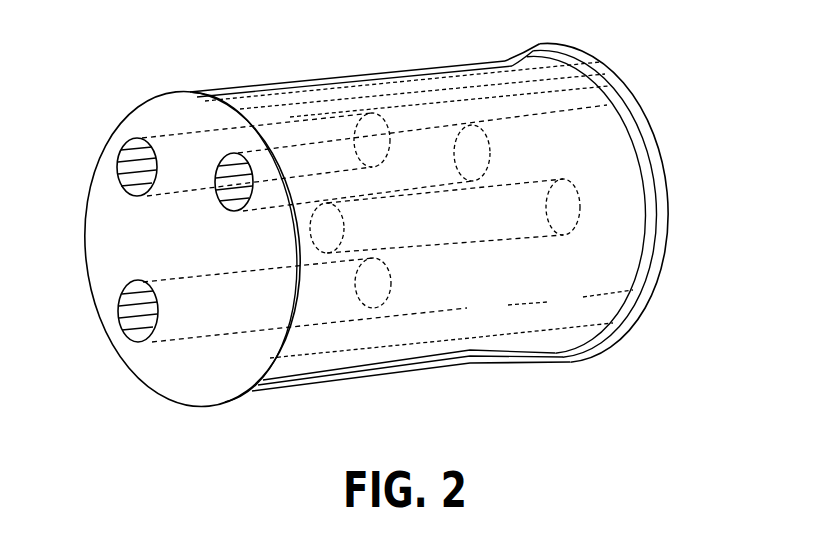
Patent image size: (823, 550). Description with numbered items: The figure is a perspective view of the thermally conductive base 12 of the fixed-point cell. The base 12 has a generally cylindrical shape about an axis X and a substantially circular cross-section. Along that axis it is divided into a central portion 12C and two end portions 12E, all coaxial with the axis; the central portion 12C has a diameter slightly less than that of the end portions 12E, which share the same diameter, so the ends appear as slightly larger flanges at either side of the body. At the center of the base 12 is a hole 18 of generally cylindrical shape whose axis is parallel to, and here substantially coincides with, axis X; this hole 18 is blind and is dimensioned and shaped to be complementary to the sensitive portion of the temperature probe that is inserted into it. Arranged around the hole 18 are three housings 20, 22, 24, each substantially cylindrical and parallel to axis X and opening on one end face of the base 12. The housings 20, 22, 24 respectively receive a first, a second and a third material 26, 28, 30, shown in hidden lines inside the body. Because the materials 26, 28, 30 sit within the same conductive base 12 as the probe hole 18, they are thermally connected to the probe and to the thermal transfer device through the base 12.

The base 12 is at (427, 242).
The central portion 12C is at (293, 84).
The end portions 12E is at (612, 82).
The hole 18 is at (455, 218).
The housing 20 is at (117, 160).
The housing 22 is at (220, 160).
The housing 24 is at (116, 324).
The first material 26 is at (325, 127).
The second material 28 is at (417, 157).
The third material 30 is at (313, 300).